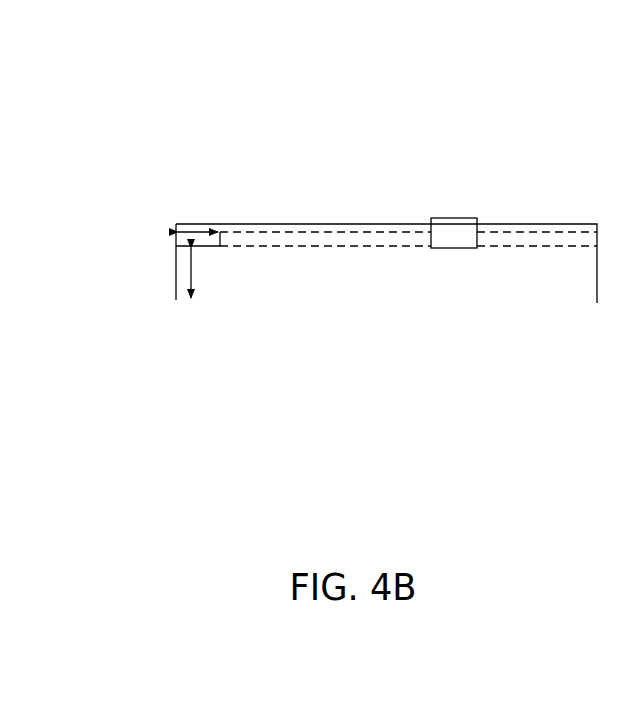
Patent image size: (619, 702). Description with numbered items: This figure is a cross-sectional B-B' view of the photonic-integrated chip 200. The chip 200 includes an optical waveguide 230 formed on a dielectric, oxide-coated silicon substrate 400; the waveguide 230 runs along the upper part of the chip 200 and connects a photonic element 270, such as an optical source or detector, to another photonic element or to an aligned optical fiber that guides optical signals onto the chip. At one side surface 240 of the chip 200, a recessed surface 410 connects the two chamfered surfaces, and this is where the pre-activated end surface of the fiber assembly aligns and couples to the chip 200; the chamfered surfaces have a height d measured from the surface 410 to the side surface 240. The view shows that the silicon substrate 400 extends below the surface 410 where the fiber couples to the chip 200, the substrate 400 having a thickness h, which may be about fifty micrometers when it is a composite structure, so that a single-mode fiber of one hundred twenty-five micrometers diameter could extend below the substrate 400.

The photonic-integrated chip 200 is at (370, 110).
The optical waveguide 230 is at (283, 226).
The side surface of the chip 240 is at (172, 270).
The photonic element 270 is at (462, 216).
The silicon substrate 400 is at (261, 273).
The surface connecting the chamfered surfaces 410 is at (221, 213).